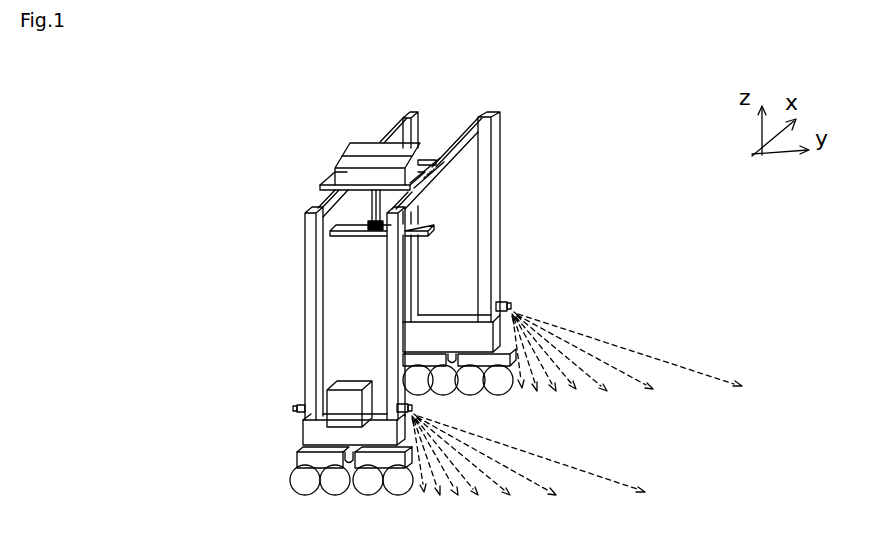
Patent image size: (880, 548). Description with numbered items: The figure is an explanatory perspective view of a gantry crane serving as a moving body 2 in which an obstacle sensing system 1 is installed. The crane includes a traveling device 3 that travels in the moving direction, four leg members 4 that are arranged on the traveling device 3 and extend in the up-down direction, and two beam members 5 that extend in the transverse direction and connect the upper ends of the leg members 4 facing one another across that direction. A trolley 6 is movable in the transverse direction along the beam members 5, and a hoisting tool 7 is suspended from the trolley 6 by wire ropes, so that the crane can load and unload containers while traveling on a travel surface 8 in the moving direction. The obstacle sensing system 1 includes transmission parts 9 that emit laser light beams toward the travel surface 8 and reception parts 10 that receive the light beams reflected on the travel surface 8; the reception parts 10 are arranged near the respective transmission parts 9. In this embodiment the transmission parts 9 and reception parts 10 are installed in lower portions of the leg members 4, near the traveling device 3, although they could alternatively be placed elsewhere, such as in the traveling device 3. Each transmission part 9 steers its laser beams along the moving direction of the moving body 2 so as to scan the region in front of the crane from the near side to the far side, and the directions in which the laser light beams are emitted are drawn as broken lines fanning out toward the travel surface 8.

The obstacle sensing system 1 is at (592, 275).
The moving body 2 is at (262, 132).
The traveling device 3 is at (474, 396).
The leg members 4 is at (499, 178).
The beam members 5 is at (387, 124).
The trolley 6 is at (320, 184).
The hoisting tool 7 is at (343, 237).
The travel surface 8 is at (697, 451).
The transmission parts 9 is at (509, 300).
The reception parts 10 is at (392, 335).